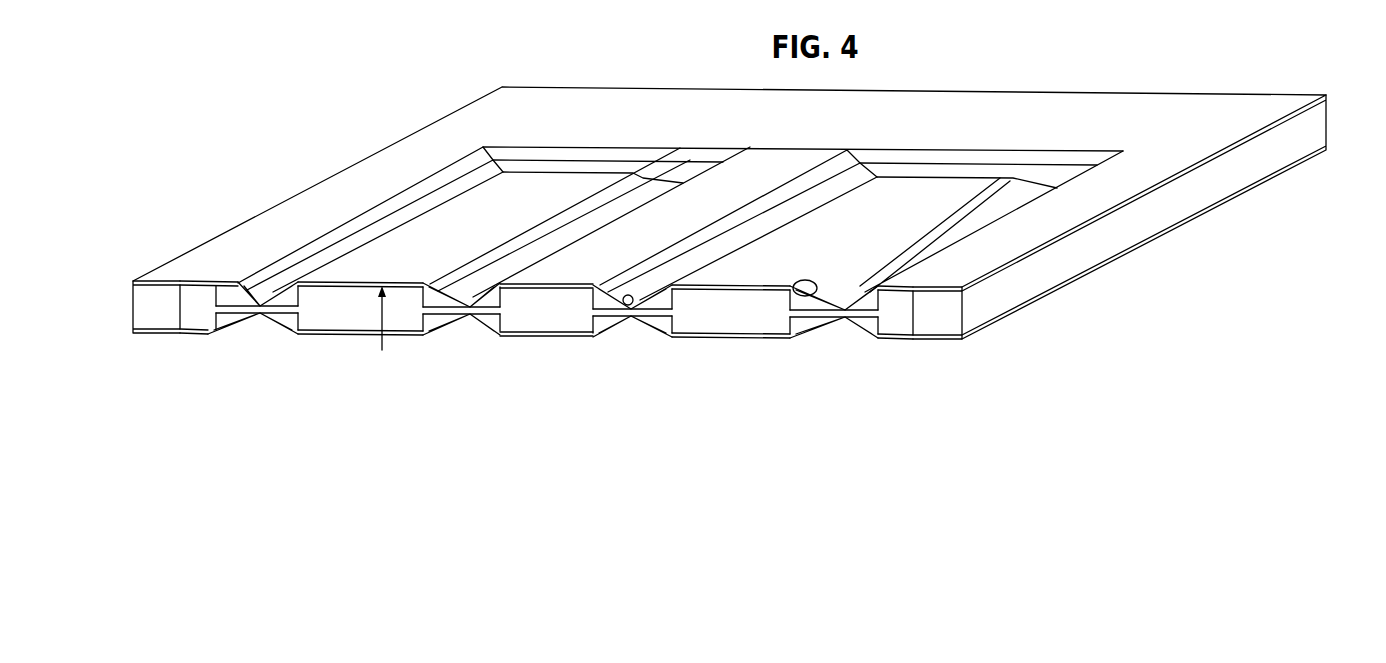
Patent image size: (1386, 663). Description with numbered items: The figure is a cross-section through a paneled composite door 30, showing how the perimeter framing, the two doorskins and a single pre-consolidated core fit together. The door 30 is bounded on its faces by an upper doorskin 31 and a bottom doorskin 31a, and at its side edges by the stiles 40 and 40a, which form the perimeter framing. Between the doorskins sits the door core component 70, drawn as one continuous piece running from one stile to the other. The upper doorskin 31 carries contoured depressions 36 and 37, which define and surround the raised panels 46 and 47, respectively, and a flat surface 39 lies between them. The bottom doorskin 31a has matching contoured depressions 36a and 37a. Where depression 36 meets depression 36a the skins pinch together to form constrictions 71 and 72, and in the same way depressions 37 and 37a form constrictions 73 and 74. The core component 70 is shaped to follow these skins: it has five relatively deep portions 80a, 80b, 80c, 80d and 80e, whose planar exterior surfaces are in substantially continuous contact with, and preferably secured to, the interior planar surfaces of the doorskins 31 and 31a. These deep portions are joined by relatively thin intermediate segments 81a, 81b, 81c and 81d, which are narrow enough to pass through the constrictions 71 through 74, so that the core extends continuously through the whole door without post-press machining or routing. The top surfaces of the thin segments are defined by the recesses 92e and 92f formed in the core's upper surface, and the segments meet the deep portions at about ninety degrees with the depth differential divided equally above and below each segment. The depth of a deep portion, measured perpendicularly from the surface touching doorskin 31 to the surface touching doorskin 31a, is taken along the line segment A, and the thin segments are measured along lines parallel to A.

The paneled door 30 is at (717, 238).
The doorskin 31 is at (1168, 106).
The bottom doorskin 31a is at (1213, 210).
The contoured depression 36 is at (987, 165).
The contoured depression 37 is at (580, 158).
The contoured depression 36a is at (650, 322).
The contoured depression 37a is at (270, 322).
The top surface 39 is at (810, 130).
The stile 40 is at (938, 328).
The stile 40a is at (161, 328).
The raised panel 46 is at (831, 232).
The raised panel 47 is at (475, 227).
The door core component 70 is at (762, 322).
The constriction 71 is at (840, 322).
The constriction 72 is at (633, 312).
The constriction 73 is at (473, 318).
The constriction 74 is at (255, 322).
The portion 80a is at (198, 293).
The portion 80b is at (333, 320).
The portion 80c is at (572, 318).
The portion 80d is at (748, 323).
The portion 80e is at (898, 305).
The intermediate segment 81a is at (208, 336).
The intermediate segment 81b is at (507, 318).
The intermediate segment 81c is at (655, 322).
The intermediate segment 81d is at (863, 332).
The recess 92e is at (630, 312).
The recess 92f is at (238, 292).
The line segment A is at (382, 332).